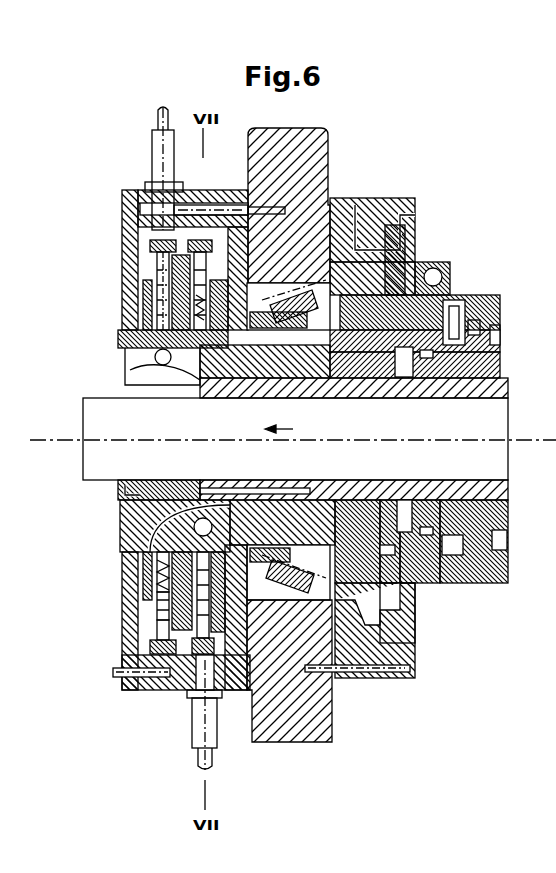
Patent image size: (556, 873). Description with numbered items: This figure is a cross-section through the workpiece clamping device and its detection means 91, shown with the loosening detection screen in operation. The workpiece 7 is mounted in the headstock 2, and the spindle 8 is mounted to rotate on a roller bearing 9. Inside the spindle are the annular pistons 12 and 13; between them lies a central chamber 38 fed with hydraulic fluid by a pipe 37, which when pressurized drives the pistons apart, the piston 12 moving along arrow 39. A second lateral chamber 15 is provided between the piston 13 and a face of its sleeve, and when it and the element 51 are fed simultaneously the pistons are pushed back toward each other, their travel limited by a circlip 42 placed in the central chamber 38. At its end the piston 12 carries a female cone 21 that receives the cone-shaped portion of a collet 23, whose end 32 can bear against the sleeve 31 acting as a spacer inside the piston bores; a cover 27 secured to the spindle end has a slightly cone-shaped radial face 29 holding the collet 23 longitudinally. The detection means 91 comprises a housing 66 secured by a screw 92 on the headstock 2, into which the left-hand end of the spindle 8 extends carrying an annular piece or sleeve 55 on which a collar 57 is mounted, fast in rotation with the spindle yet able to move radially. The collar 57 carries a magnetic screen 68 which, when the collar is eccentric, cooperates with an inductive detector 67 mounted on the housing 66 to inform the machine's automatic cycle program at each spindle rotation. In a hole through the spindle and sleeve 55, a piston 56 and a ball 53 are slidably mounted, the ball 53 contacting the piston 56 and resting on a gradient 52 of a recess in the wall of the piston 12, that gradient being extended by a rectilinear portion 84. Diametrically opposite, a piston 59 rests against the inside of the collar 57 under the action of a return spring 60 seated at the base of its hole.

The headstock 2 is at (313, 145).
The workpiece 7 is at (108, 423).
The spindle 8 is at (491, 300).
The roller bearing 9 is at (318, 258).
The piston 12 is at (435, 583).
The piston 13 is at (490, 362).
The second lateral chamber 15 is at (507, 322).
The female cone 21 is at (120, 533).
The collet 23 is at (125, 372).
The cover 27 is at (128, 345).
The radial face 29 is at (177, 380).
The sleeve 31 is at (412, 583).
The collet end 32 is at (383, 625).
The pipe 37 is at (450, 294).
The central chamber 38 is at (455, 583).
The arrow 39 is at (293, 426).
The circlip 42 is at (483, 583).
The element 51 is at (427, 583).
The gradient 52 is at (218, 505).
The ball 53 is at (148, 562).
The annular piece or sleeve 55 is at (148, 590).
The piston 56 is at (150, 608).
The collar 57 is at (193, 640).
The piston 59 is at (122, 318).
The return spring 60 is at (120, 335).
The housing 66 is at (132, 215).
The inductive detector 67 is at (192, 740).
The magnetic screen 68 is at (168, 682).
The rectilinear portion 84 is at (118, 482).
The detection means 91 is at (212, 188).
The screw 92 is at (273, 208).